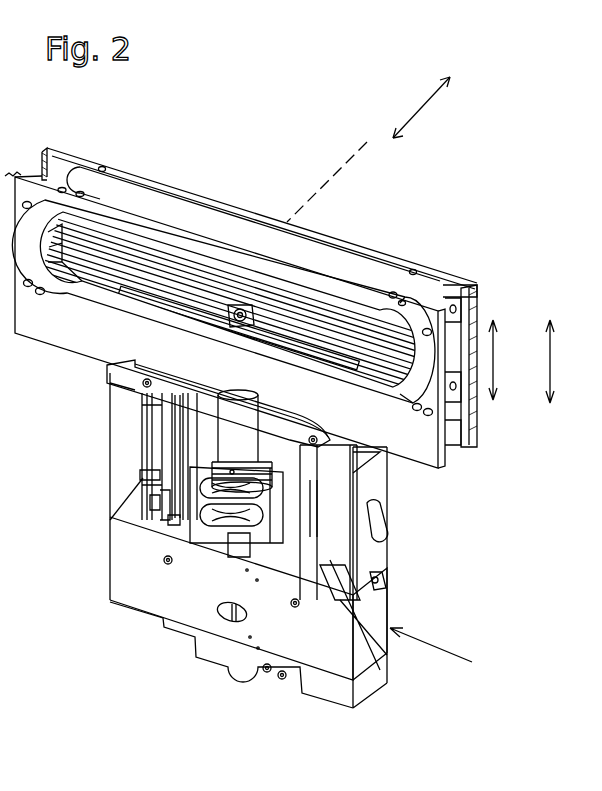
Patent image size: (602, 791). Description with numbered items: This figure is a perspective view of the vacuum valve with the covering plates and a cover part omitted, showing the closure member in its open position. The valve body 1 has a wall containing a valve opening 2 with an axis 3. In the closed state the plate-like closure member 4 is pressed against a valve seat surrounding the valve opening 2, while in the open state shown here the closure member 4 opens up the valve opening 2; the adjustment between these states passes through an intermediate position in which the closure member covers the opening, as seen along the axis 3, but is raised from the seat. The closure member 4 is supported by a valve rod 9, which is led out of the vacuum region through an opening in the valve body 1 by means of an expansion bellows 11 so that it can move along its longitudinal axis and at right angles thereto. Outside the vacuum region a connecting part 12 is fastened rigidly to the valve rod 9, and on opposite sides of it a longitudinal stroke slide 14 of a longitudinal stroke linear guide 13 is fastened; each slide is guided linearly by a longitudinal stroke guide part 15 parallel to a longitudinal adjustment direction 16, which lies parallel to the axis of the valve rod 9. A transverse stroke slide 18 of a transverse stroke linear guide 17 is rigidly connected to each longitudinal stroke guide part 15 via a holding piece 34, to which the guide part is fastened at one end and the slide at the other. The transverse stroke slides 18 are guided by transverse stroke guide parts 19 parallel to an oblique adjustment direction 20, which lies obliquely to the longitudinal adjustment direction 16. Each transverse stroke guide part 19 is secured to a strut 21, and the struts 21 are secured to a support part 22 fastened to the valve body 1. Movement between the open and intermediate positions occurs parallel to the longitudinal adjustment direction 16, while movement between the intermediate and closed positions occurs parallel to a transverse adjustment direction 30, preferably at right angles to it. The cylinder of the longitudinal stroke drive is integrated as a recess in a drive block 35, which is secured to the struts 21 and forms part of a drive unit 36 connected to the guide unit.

The valve body 1 is at (430, 453).
The valve opening 2 is at (125, 240).
The axis 3 is at (342, 165).
The closure member 4 is at (336, 338).
The valve rod 9 is at (242, 553).
The expansion bellows 11 is at (250, 445).
The connecting part 12 is at (290, 530).
The longitudinal stroke linear guide 13 is at (168, 530).
The longitudinal stroke slide 14 is at (173, 455).
The longitudinal stroke guide part 15 is at (180, 425).
The longitudinal adjustment direction 16 is at (497, 360).
The transverse stroke linear guide 17 is at (163, 497).
The transverse stroke slide 18 is at (140, 477).
The transverse stroke guide part 19 is at (157, 407).
The oblique adjustment direction 20 is at (543, 363).
The strut 21 is at (118, 473).
The support part 22 is at (290, 427).
The transverse adjustment direction 30 is at (422, 105).
The holding piece 34 is at (175, 520).
The drive block 35 is at (292, 647).
The drive unit 36 is at (306, 577).